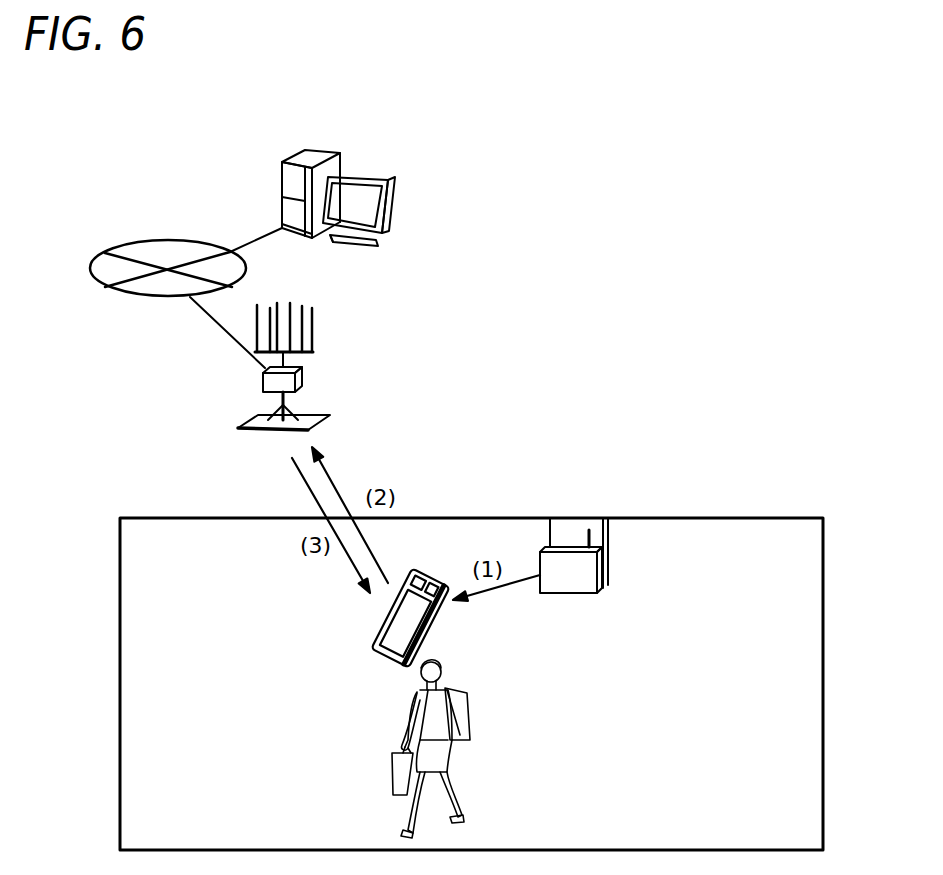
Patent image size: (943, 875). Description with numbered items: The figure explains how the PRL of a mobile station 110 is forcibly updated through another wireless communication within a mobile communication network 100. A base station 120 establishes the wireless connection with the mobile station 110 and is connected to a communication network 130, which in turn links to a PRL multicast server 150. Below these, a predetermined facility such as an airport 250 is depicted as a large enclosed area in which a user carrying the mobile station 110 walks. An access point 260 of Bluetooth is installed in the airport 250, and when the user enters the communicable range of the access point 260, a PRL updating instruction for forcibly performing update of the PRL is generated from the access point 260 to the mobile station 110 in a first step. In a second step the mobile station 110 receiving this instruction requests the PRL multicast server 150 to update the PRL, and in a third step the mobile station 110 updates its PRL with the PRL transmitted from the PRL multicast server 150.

The mobile communication network 100 is at (116, 163).
The mobile station 110 is at (387, 667).
The base station 120 is at (305, 376).
The communication network 130 is at (117, 245).
The PRL multicast server 150 is at (334, 151).
The airport 250 is at (660, 517).
The access point 260 is at (567, 593).